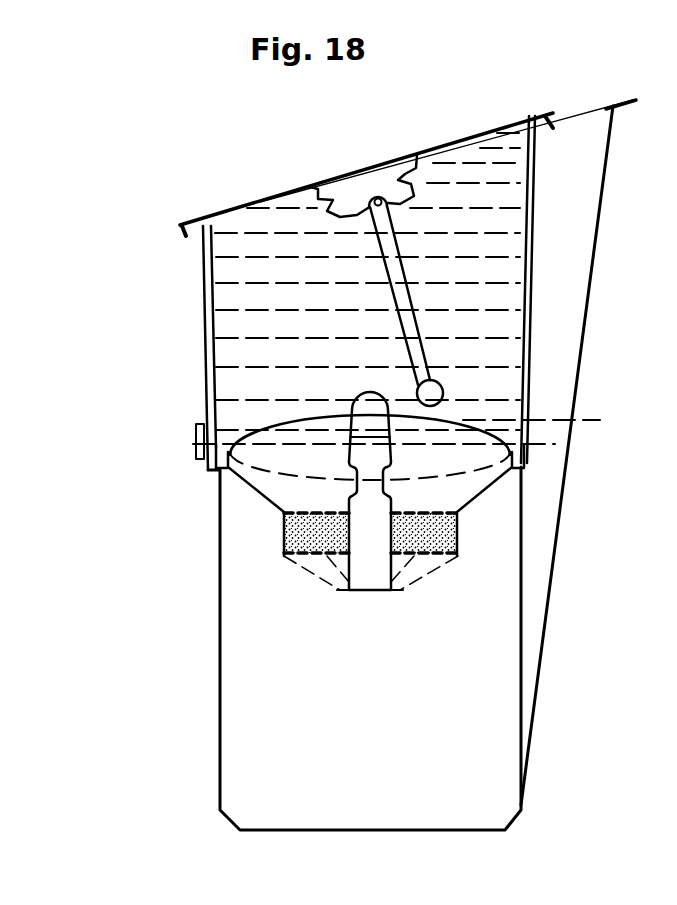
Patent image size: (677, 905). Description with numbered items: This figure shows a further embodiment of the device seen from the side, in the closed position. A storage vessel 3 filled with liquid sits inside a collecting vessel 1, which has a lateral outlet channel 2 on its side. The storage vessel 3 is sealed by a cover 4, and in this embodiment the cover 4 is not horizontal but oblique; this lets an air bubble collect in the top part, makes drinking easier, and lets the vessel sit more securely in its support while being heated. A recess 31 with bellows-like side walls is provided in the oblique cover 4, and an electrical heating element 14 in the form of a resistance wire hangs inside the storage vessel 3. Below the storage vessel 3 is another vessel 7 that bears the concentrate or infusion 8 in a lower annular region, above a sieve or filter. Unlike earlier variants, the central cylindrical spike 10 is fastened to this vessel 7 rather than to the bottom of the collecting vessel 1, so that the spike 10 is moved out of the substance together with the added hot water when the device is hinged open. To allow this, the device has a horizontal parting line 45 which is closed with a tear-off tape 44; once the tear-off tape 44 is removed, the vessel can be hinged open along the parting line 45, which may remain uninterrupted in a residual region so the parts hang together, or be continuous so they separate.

The collecting vessel 1 is at (220, 689).
The lateral outlet channel 2 is at (568, 283).
The storage vessel 3 is at (210, 325).
The cover 4 is at (283, 194).
The vessel 7 is at (258, 500).
The concentrate or infusion 8 is at (284, 546).
The spike 10 is at (400, 485).
The heating element 14 is at (444, 390).
The recess 31 is at (393, 178).
The tear-off tape 44 is at (199, 441).
The parting line 45 is at (554, 417).